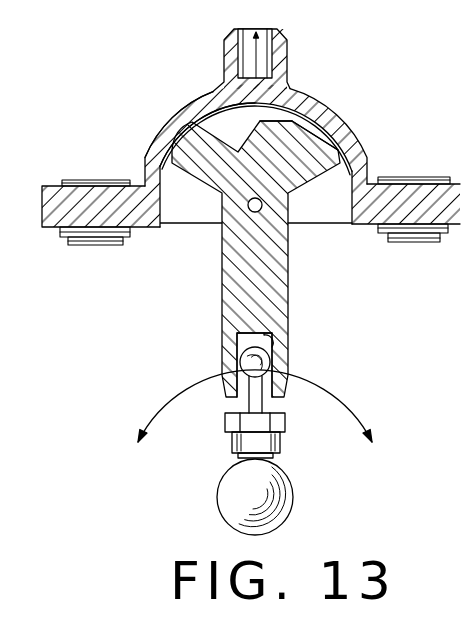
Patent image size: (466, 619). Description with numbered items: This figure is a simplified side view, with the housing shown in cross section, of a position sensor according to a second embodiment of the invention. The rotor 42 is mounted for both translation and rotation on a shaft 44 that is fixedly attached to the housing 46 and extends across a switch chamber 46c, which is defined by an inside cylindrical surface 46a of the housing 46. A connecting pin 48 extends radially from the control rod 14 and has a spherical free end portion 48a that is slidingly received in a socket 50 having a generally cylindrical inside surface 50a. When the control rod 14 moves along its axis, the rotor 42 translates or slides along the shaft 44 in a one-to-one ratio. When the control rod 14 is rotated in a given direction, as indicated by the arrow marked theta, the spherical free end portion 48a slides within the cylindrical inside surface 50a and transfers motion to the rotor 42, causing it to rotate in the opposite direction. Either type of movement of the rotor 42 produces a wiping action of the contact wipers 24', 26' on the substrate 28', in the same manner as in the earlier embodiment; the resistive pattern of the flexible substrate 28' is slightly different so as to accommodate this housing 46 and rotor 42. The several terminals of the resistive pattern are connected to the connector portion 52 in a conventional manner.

The control rod 14 is at (277, 487).
The contact wiper 24' is at (192, 132).
The contact wiper 26' is at (334, 111).
The substrate 28' is at (299, 90).
The rotor 42 is at (279, 250).
The shaft 44 is at (248, 211).
The housing 46 is at (368, 121).
The inside cylindrical surface 46a is at (368, 158).
The switch chamber 46c is at (227, 122).
The connecting pin 48 is at (253, 400).
The spherical free end portion 48a is at (248, 358).
The socket 50 is at (237, 360).
The cylindrical inside surface 50a is at (278, 330).
The connector portion 52 is at (267, 52).